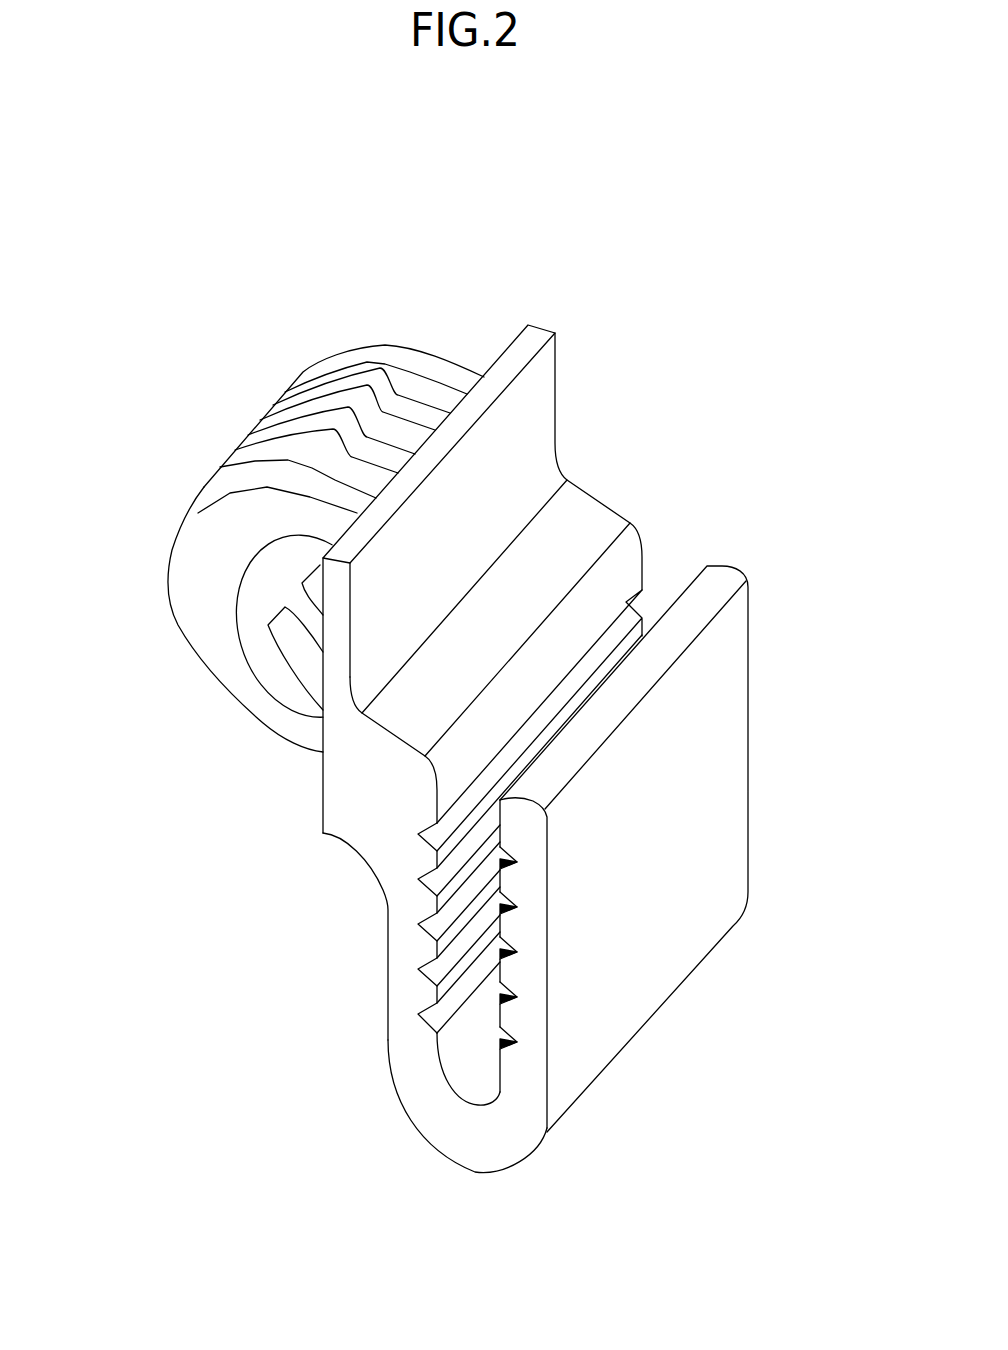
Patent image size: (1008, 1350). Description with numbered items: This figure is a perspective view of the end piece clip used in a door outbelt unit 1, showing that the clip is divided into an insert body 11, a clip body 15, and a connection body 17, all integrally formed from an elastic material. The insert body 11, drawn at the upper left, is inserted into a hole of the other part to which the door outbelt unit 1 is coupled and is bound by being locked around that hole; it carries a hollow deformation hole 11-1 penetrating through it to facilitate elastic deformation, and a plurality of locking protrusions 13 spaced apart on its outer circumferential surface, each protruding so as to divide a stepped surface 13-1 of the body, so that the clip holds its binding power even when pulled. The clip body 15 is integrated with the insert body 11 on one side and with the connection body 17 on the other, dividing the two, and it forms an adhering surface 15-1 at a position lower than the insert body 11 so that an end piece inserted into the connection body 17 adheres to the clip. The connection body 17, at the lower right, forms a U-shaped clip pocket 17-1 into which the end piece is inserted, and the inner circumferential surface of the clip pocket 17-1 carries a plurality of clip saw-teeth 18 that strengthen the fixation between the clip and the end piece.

The door outbelt unit 1 is at (753, 492).
The insert body 11 is at (217, 552).
The hollow deformation hole 11-1 is at (263, 590).
The locking protrusion 13 is at (381, 380).
The stepped surface 13-1 is at (425, 420).
The clip body 15 is at (352, 792).
The adhering surface 15-1 is at (572, 540).
The connection body 17 is at (640, 968).
The clip pocket 17-1 is at (472, 1060).
The clip saw-teeth 18 is at (505, 1012).